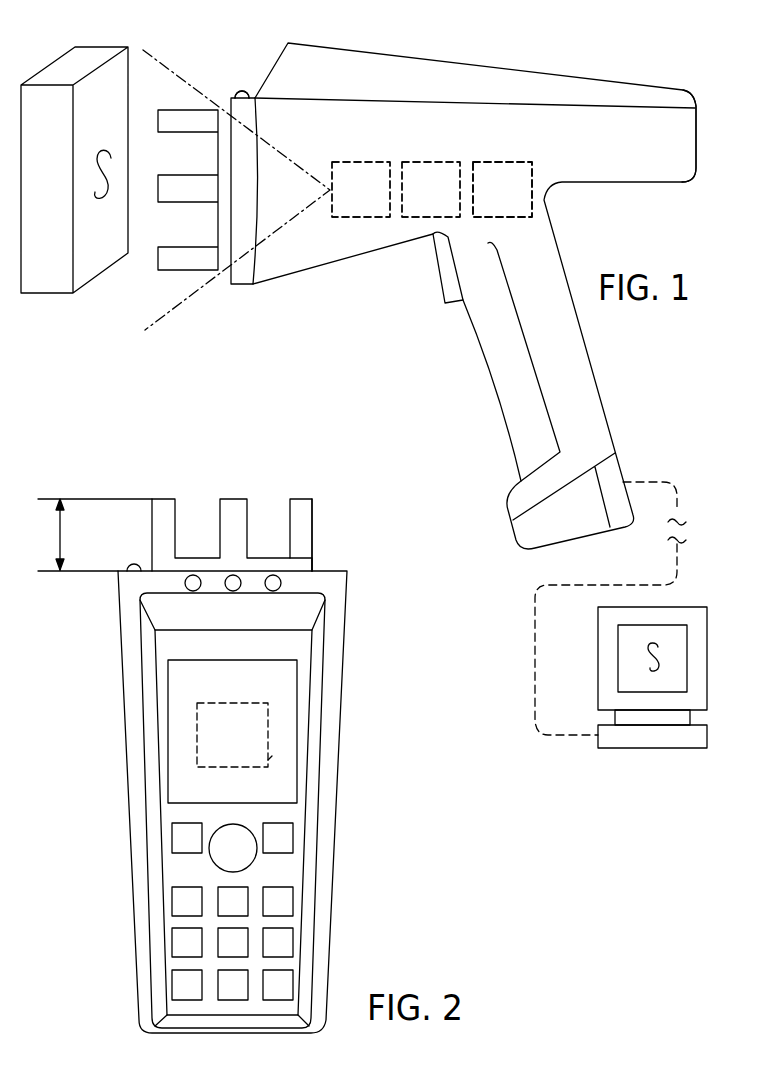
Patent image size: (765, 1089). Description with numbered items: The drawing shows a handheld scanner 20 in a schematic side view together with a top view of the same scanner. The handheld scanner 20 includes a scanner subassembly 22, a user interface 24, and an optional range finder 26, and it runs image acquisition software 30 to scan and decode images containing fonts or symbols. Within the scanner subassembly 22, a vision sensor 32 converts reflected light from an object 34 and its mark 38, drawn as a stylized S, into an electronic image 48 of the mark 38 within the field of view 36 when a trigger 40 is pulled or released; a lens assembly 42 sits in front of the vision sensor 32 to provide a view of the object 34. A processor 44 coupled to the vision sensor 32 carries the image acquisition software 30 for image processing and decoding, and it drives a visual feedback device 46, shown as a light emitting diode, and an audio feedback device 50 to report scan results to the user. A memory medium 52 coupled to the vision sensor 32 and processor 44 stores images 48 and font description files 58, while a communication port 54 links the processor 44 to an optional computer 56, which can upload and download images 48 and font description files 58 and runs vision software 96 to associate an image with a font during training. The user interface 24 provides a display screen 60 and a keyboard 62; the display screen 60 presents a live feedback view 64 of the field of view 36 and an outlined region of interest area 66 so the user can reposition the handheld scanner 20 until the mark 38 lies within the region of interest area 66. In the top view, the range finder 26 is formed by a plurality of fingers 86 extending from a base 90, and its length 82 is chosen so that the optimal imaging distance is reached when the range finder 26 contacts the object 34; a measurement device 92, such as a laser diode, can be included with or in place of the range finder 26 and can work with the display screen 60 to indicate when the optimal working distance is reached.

In FIG. 1, the handheld scanner 20 is at (585, 56).
In FIG. 2, the handheld scanner 20 is at (110, 743).
In FIG. 1, the scanner subassembly 22 is at (697, 158).
In FIG. 1, the user interface 24 is at (347, 50).
In FIG. 2, the user interface 24 is at (287, 647).
In FIG. 1, the range finder 26 is at (158, 259).
In FIG. 2, the range finder 26 is at (313, 511).
In FIG. 1, the image acquisition software 30 is at (430, 162).
In FIG. 1, the vision sensor 32 is at (352, 162).
In FIG. 1, the object 34 is at (46, 295).
In FIG. 1, the field of view 36 is at (176, 74).
In FIG. 1, the mark 38 is at (102, 146).
In FIG. 1, the trigger 40 is at (433, 271).
In FIG. 1, the lens assembly 42 is at (337, 162).
In FIG. 1, the processor 44 is at (415, 162).
In FIG. 1, the visual feedback device 46 is at (243, 90).
In FIG. 2, the visual feedback device 46 is at (193, 575).
In FIG. 1, the electronic image 48 is at (534, 186).
In FIG. 1, the audio feedback device 50 is at (242, 94).
In FIG. 2, the audio feedback device 50 is at (274, 575).
In FIG. 1, the memory medium 52 is at (485, 162).
In FIG. 1, the communication port 54 is at (613, 461).
In FIG. 1, the computer 56 is at (598, 657).
In FIG. 1, the font description file 58 is at (508, 162).
In FIG. 2, the display screen 60 is at (298, 697).
In FIG. 2, the keyboard 62 is at (282, 870).
In FIG. 2, the live feedback view 64 is at (282, 735).
In FIG. 2, the region of interest area 66 is at (272, 756).
In FIG. 2, the length of the range finder 82 is at (58, 526).
In FIG. 2, the fingers 86 is at (313, 532).
In FIG. 2, the base 90 is at (302, 563).
In FIG. 2, the measurement device 92 is at (132, 564).
In FIG. 1, the vision software 96 is at (654, 625).